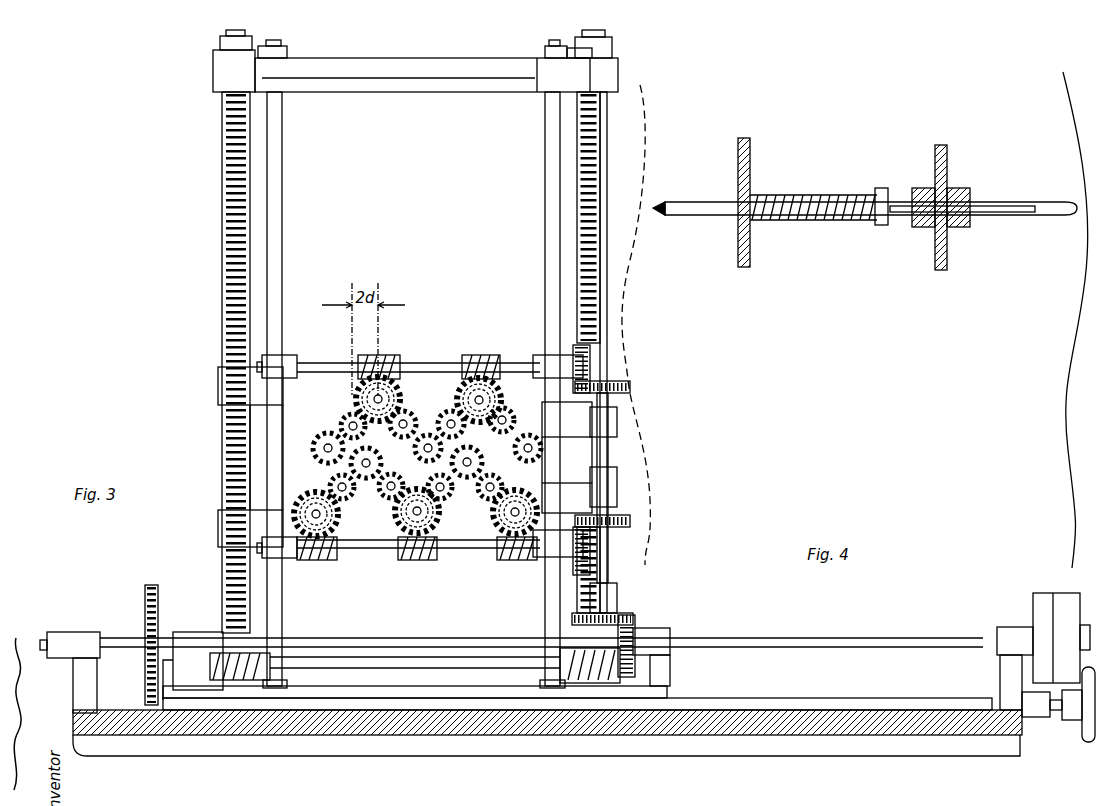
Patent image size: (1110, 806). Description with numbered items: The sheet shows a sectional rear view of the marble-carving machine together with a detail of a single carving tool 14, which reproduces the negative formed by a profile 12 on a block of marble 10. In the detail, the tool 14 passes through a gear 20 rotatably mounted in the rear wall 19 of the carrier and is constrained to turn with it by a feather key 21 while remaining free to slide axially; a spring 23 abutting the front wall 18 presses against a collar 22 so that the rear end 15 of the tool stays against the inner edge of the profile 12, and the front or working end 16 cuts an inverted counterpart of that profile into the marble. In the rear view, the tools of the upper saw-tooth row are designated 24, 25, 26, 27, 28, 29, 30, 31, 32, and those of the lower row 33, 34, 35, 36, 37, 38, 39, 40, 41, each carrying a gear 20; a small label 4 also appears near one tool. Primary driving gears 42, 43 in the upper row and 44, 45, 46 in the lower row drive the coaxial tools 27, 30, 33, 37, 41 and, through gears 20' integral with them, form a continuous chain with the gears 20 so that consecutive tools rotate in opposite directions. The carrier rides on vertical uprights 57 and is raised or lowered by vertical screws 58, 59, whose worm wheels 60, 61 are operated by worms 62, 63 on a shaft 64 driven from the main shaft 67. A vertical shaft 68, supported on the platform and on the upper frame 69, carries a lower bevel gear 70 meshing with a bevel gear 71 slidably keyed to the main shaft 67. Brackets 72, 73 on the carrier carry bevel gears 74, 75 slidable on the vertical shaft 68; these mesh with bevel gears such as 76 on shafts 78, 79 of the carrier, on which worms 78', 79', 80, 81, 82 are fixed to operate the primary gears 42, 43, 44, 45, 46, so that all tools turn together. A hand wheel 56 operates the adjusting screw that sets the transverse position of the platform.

In FIG. 3, the block of marble 10 is at (652, 462).
In FIG. 4, the profile 12 is at (1067, 416).
In FIG. 4, the carving tool 14 is at (706, 216).
In FIG. 4, the rear end of tool 15 is at (1060, 216).
In FIG. 4, the front or working end of tool 16 is at (661, 216).
In FIG. 4, the front wall 18 is at (751, 255).
In FIG. 4, the rear wall 19 is at (935, 268).
In FIG. 3, the gear 20 is at (285, 464).
In FIG. 4, the gear 20 is at (948, 244).
In FIG. 3, the gear 20' is at (337, 356).
In FIG. 4, the feather key 21 is at (982, 205).
In FIG. 4, the collar 22 is at (882, 188).
In FIG. 4, the spring 23 is at (815, 196).
In FIG. 3, the tool 24 is at (318, 447).
In FIG. 3, the tool 25 is at (350, 420).
In FIG. 3, the tool 26 is at (395, 385).
In FIG. 3, the tool 27 is at (408, 418).
In FIG. 3, the tool 28 is at (428, 440).
In FIG. 3, the tool 29 is at (452, 418).
In FIG. 3, the tool 30 is at (485, 392).
In FIG. 3, the tool 31 is at (505, 412).
In FIG. 3, the tool 32 is at (530, 440).
In FIG. 3, the tool 33 is at (331, 545).
In FIG. 3, the tool 34 is at (345, 500).
In FIG. 3, the tool 35 is at (380, 484).
In FIG. 3, the tool 36 is at (390, 500).
In FIG. 3, the tool 37 is at (412, 540).
In FIG. 3, the tool 38 is at (442, 500).
In FIG. 3, the tool 39 is at (467, 480).
In FIG. 3, the tool 40 is at (490, 500).
In FIG. 3, the tool 41 is at (520, 538).
In FIG. 3, the gear 4 is at (340, 425).
In FIG. 3, the primary driving gear 42 is at (388, 370).
In FIG. 3, the primary driving gear 43 is at (480, 360).
In FIG. 3, the primary driving gear 44 is at (300, 562).
In FIG. 3, the primary driving gear 45 is at (425, 562).
In FIG. 3, the primary driving gear 46 is at (520, 562).
In FIG. 3, the hand wheel 56 is at (1085, 737).
In FIG. 3, the vertical upright 57 is at (278, 212).
In FIG. 3, the vertical screw 58 is at (230, 254).
In FIG. 3, the vertical screw 59 is at (578, 193).
In FIG. 3, the worm wheel 60 is at (290, 656).
In FIG. 3, the worm wheel 61 is at (542, 648).
In FIG. 3, the worm 62 is at (222, 643).
In FIG. 3, the worm 63 is at (583, 682).
In FIG. 3, the shaft 64 is at (382, 664).
In FIG. 3, the main shaft 67 is at (845, 636).
In FIG. 3, the vertical shaft 68 is at (580, 268).
In FIG. 3, the upper frame 69 is at (432, 66).
In FIG. 3, the lower bevel gear 70 is at (620, 615).
In FIG. 3, the bevel gear 71 is at (636, 662).
In FIG. 3, the bracket 72 is at (606, 445).
In FIG. 3, the bracket 73 is at (614, 490).
In FIG. 3, the bevel gear 74 is at (610, 420).
In FIG. 3, the bevel gear 75 is at (615, 528).
In FIG. 3, the bevel gear 76 is at (576, 350).
In FIG. 3, the worm shaft 78 is at (418, 340).
In FIG. 3, the worm 78' is at (442, 329).
In FIG. 3, the worm shaft 79 is at (418, 563).
In FIG. 3, the worm 79' is at (480, 333).
In FIG. 3, the worm 80 is at (310, 562).
In FIG. 3, the worm 81 is at (410, 562).
In FIG. 3, the worm 82 is at (510, 562).